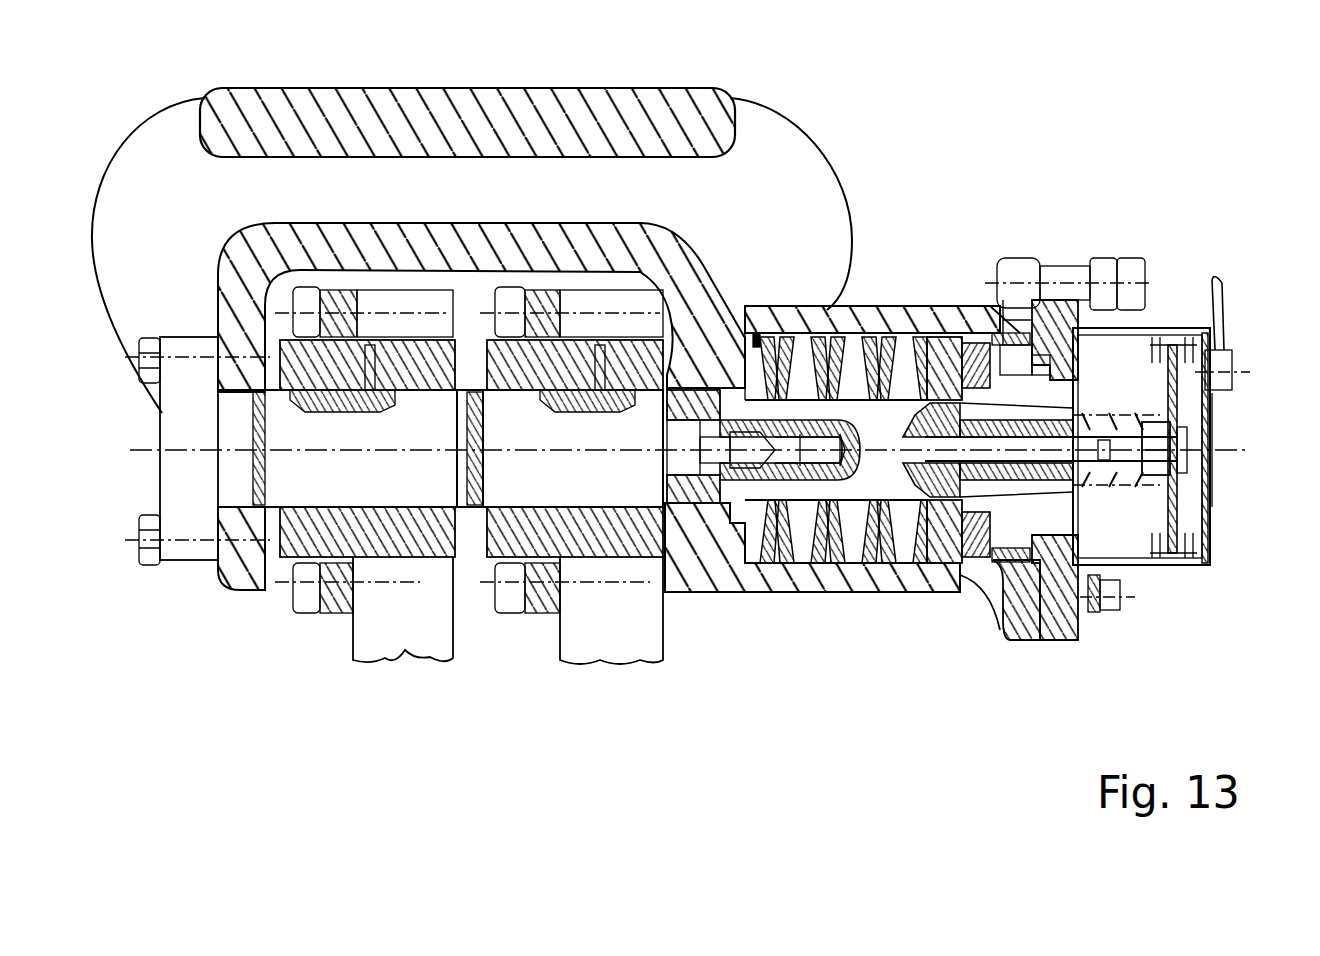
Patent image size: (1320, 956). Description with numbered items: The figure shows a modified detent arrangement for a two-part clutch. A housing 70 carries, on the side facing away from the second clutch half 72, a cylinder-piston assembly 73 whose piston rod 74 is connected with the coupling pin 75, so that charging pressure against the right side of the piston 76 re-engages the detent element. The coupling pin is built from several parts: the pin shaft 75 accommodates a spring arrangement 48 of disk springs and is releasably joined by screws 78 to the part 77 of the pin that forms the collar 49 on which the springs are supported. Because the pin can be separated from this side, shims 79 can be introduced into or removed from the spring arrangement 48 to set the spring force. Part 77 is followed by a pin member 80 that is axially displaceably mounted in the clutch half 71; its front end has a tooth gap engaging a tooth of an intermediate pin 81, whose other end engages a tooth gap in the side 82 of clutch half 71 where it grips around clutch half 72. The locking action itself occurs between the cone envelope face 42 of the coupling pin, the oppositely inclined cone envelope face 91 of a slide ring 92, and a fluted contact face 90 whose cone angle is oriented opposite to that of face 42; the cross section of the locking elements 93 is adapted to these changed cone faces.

The cone envelope face 42 is at (1073, 362).
The spring arrangement 48 is at (862, 345).
The collar 49 is at (757, 348).
The housing 70 is at (905, 315).
The clutch half 71 is at (563, 657).
The second clutch half 72 is at (413, 627).
The cylinder-piston assembly 73 is at (1147, 397).
The piston rod 74 is at (1140, 462).
The coupling pin 75 is at (850, 483).
The piston 76 is at (1170, 507).
The part of the pin 77 is at (678, 465).
The screws 78 is at (667, 527).
The shims 79 is at (727, 505).
The pin member 80 is at (500, 592).
The intermediate pin 81 is at (310, 585).
The side of clutch half 82 is at (195, 560).
The fluted contact face 90 is at (995, 560).
The cone envelope face 91 is at (975, 570).
The slide ring 92 is at (967, 333).
The locking elements 93 is at (1018, 340).